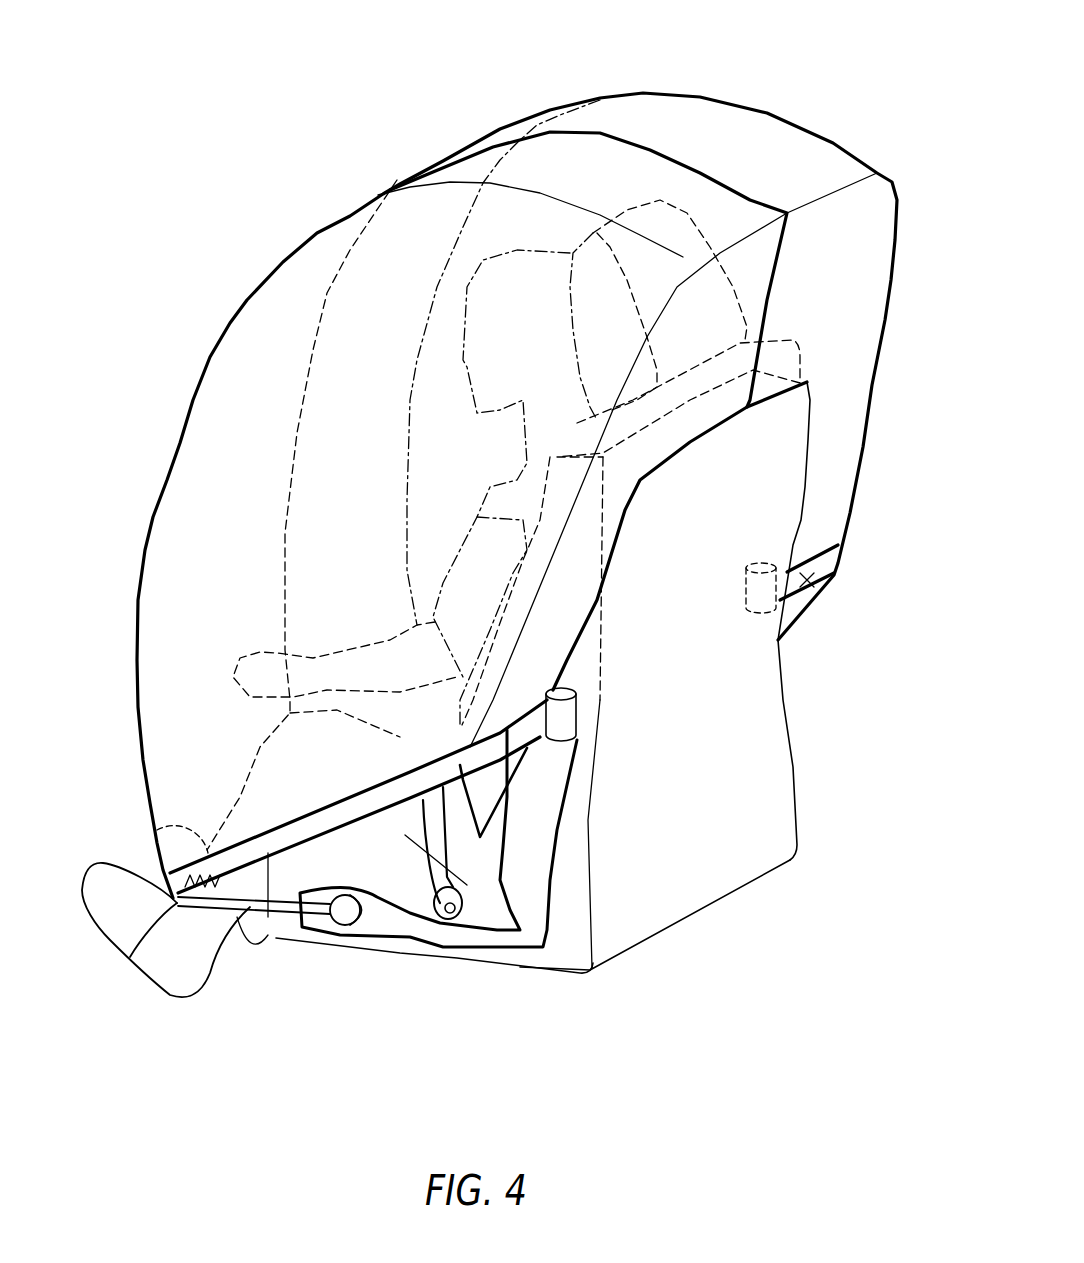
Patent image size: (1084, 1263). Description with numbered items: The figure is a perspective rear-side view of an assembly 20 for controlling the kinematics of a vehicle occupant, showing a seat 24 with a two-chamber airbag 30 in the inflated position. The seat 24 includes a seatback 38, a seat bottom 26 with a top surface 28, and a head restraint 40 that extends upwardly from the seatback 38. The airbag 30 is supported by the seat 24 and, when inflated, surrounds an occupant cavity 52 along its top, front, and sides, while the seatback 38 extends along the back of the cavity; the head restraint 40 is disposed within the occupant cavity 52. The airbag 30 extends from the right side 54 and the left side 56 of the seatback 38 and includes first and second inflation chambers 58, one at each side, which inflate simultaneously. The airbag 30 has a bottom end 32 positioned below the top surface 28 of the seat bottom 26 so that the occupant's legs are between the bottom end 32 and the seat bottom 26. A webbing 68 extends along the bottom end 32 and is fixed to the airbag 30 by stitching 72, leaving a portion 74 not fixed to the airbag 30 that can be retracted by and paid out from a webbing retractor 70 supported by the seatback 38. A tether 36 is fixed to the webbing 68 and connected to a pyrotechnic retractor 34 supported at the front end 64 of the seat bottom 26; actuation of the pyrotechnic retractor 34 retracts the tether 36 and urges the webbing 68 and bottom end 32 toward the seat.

The assembly 20 is at (157, 293).
The seat 24 is at (840, 729).
The seat bottom 26 is at (460, 962).
The top surface 28 is at (390, 880).
The airbag 30 is at (713, 77).
The bottom end 32 is at (133, 957).
The pyrotechnic retractor 34 is at (330, 917).
The tether 36 is at (240, 913).
The seatback 38 is at (783, 470).
The head restraint 40 is at (680, 240).
The occupant cavity 52 is at (433, 373).
The right side 54 is at (786, 700).
The left side 56 is at (570, 910).
The inflation chamber 58 is at (647, 110).
The front end 64 is at (268, 917).
The webbing 68 is at (805, 583).
The webbing retractor 70 is at (763, 612).
The stitching 72 is at (170, 888).
The portion 74 is at (830, 562).